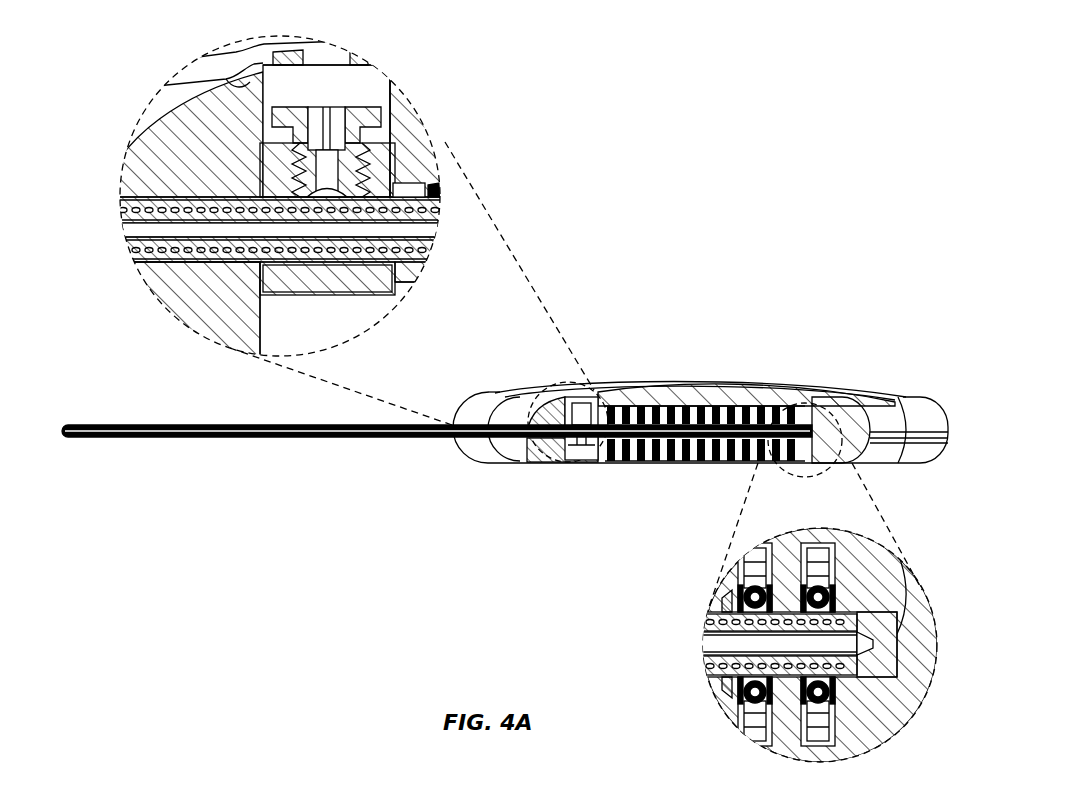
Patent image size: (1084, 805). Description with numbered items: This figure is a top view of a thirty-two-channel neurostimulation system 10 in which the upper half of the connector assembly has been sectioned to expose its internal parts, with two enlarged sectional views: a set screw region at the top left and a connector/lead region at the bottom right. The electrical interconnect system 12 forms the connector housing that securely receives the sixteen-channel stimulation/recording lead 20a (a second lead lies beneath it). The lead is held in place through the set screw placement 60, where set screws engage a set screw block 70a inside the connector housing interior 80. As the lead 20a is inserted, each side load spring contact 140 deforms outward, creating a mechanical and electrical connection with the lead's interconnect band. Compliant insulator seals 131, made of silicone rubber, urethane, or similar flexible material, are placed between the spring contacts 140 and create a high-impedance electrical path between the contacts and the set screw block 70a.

The neurostimulation system 10 is at (813, 347).
The electrical interconnect system 12 is at (520, 455).
The stimulation/recording lead 20a is at (125, 232).
The set screw placement 60 is at (326, 58).
The set screw block 70a is at (290, 82).
The connector housing interior 80 is at (165, 128).
The insulator seal 131 is at (443, 190).
The side load spring contact 140 is at (835, 548).